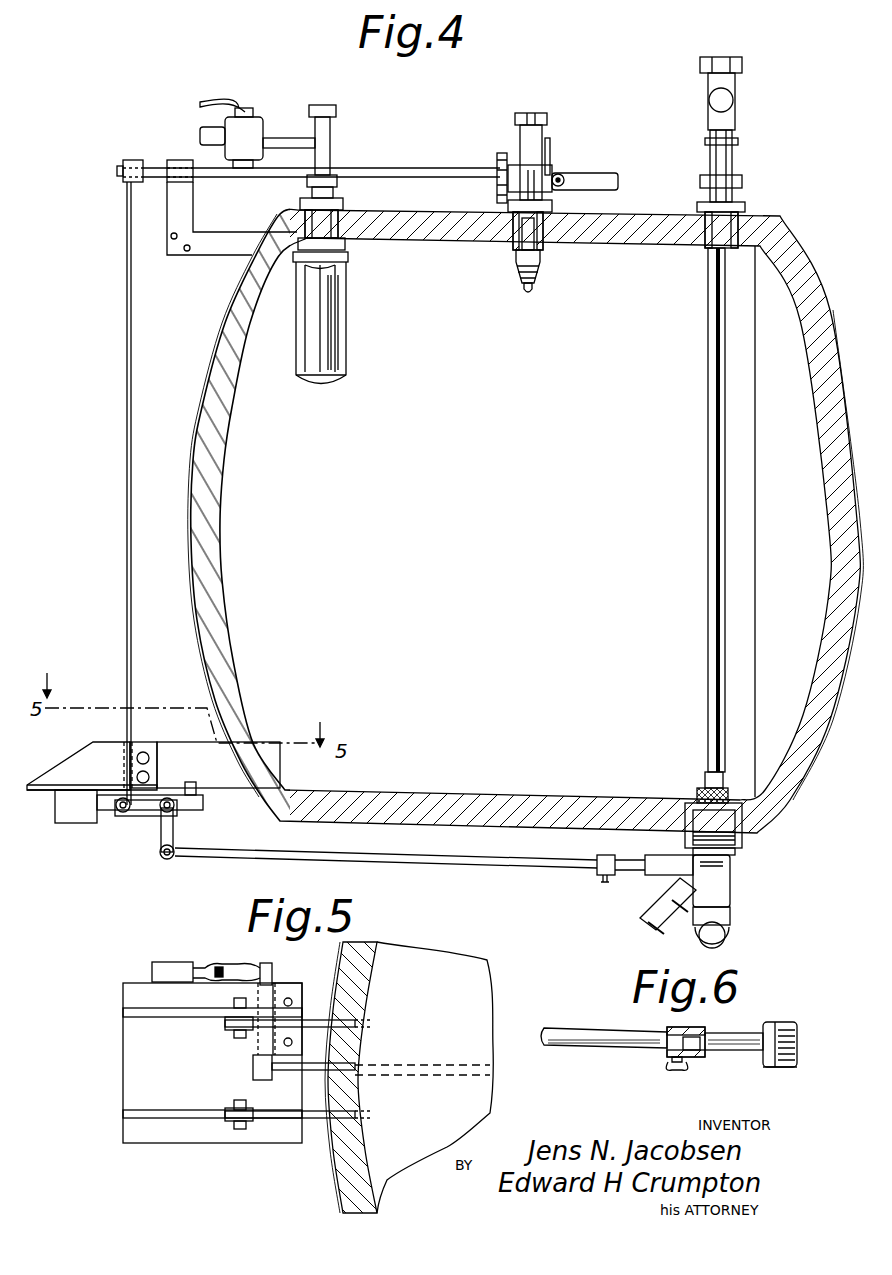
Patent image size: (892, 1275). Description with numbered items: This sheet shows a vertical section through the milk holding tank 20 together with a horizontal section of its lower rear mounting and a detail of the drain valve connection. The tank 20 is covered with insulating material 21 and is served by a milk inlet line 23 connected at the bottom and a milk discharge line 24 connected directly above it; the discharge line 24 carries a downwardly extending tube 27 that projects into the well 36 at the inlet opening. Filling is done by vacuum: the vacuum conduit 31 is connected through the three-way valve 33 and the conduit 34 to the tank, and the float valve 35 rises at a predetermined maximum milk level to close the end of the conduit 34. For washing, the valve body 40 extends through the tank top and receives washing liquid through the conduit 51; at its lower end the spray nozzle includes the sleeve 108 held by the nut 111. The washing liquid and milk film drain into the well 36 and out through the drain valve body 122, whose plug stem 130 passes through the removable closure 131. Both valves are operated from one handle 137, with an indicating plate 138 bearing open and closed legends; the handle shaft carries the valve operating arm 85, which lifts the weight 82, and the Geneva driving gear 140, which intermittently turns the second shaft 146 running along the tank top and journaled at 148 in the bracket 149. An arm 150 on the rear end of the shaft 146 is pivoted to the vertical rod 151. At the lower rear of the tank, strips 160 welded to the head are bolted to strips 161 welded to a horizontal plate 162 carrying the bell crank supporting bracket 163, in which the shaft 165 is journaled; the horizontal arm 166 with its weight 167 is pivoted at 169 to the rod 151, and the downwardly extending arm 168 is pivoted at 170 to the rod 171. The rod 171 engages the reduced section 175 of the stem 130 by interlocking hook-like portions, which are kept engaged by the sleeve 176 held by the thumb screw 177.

In FIG. 4, the holding tank 20 is at (243, 347).
In FIG. 5, the holding tank 20 is at (364, 1042).
In FIG. 4, the insulating material 21 is at (835, 574).
In FIG. 5, the insulating material 21 is at (368, 1160).
In FIG. 4, the milk inlet line 23 is at (729, 934).
In FIG. 4, the milk discharge line 24 is at (737, 98).
In FIG. 4, the downwardly extending tube 27 is at (709, 580).
In FIG. 4, the vacuum conduit 31 is at (204, 128).
In FIG. 4, the three-way valve 33 is at (251, 113).
In FIG. 4, the conduit 34 is at (331, 150).
In FIG. 4, the float valve 35 is at (346, 360).
In FIG. 4, the well 36 is at (745, 835).
In FIG. 4, the valve body 40 is at (560, 244).
In FIG. 4, the conduit 51 is at (616, 181).
In FIG. 4, the weight 82 is at (523, 130).
In FIG. 4, the valve operating arm 85 is at (548, 202).
In FIG. 4, the sleeve 108 is at (540, 279).
In FIG. 4, the nut 111 is at (533, 290).
In FIG. 4, the body 122 is at (668, 850).
In FIG. 6, the body 122 is at (797, 1042).
In FIG. 4, the stem 130 is at (625, 873).
In FIG. 6, the stem 130 is at (740, 1033).
In FIG. 6, the closure 131 is at (767, 1070).
In FIG. 4, the operating handle 137 is at (561, 175).
In FIG. 4, the indicating plate 138 is at (549, 150).
In FIG. 4, the Geneva driving gear 140 is at (504, 184).
In FIG. 4, the second shaft 146 is at (422, 172).
In FIG. 4, the journal 148 is at (183, 150).
In FIG. 4, the bracket 149 is at (188, 222).
In FIG. 4, the arm 150 is at (124, 178).
In FIG. 4, the vertical rod 151 is at (132, 600).
In FIG. 5, the vertical rod 151 is at (220, 980).
In FIG. 4, the strips 160 is at (195, 738).
In FIG. 5, the strips 160 is at (358, 1020).
In FIG. 4, the strips 161 is at (80, 755).
In FIG. 5, the strips 161 is at (165, 1012).
In FIG. 4, the horizontal plate 162 is at (48, 797).
In FIG. 5, the horizontal plate 162 is at (212, 1063).
In FIG. 4, the bell crank supporting bracket 163 is at (198, 806).
In FIG. 5, the shaft 165 is at (278, 990).
In FIG. 4, the horizontal arm 166 is at (152, 818).
In FIG. 5, the horizontal arm 166 is at (262, 963).
In FIG. 4, the weight 167 is at (65, 824).
In FIG. 5, the weight 167 is at (158, 962).
In FIG. 4, the downwardly extending arm 168 is at (176, 828).
In FIG. 5, the downwardly extending arm 168 is at (268, 1075).
In FIG. 4, the pivotal connection 169 is at (120, 813).
In FIG. 5, the pivotal connection 169 is at (219, 964).
In FIG. 4, the pivotal connection 170 is at (172, 858).
In FIG. 4, the rod 171 is at (503, 866).
In FIG. 5, the rod 171 is at (446, 1065).
In FIG. 6, the rod 171 is at (597, 1028).
In FIG. 6, the reduced-diameter section 175 is at (693, 1060).
In FIG. 4, the sleeve 176 is at (604, 855).
In FIG. 6, the sleeve 176 is at (700, 1027).
In FIG. 6, the thumb screw 177 is at (676, 1072).